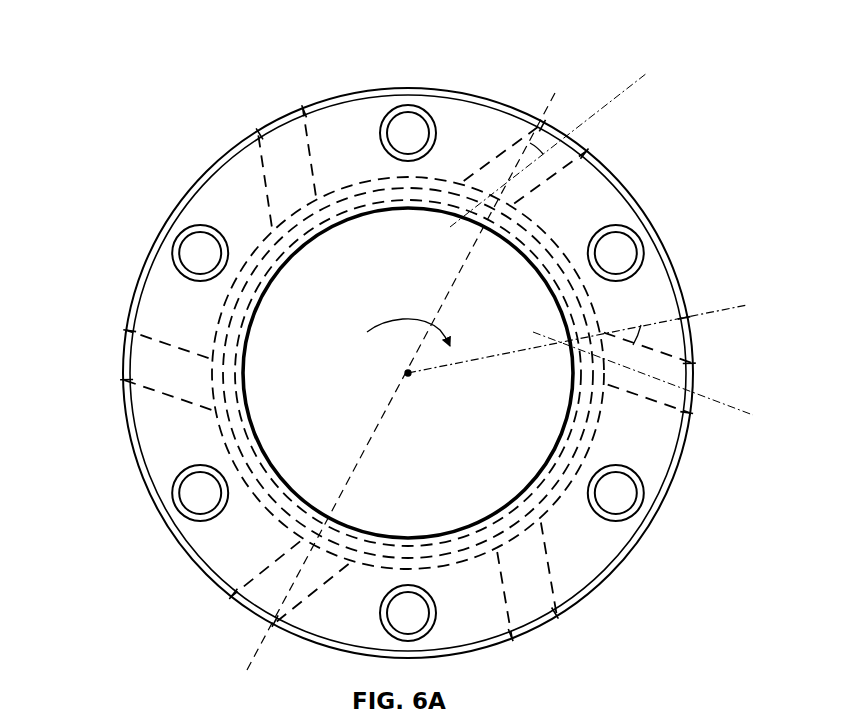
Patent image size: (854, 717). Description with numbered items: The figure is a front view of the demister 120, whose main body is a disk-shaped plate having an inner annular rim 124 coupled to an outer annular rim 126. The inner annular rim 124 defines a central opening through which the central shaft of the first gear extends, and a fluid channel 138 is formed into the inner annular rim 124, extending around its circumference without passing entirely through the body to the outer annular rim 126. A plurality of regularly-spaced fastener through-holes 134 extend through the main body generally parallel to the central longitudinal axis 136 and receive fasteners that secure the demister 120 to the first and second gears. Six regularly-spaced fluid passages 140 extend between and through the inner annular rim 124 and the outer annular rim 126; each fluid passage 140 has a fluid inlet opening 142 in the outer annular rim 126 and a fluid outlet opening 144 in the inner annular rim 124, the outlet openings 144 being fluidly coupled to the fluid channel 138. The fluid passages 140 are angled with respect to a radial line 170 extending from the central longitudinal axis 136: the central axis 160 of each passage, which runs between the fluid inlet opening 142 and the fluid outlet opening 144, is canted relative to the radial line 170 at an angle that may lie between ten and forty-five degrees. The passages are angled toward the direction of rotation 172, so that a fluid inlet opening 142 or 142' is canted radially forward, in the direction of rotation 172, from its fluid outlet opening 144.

The demister 120 is at (121, 142).
The inner annular rim 124 is at (343, 229).
The outer annular rim 126 is at (406, 87).
The fastener through-holes 134 is at (200, 255).
The central longitudinal axis 136 is at (406, 373).
The fluid channel 138 is at (258, 439).
The fluid passages 140 is at (290, 103).
The fluid inlet opening 142 is at (255, 158).
The fluid inlet opening 142' is at (543, 126).
The fluid outlet opening 144 is at (304, 244).
The central axis 160 is at (652, 72).
The radial line 170 is at (455, 294).
The direction of rotation 172 is at (367, 332).